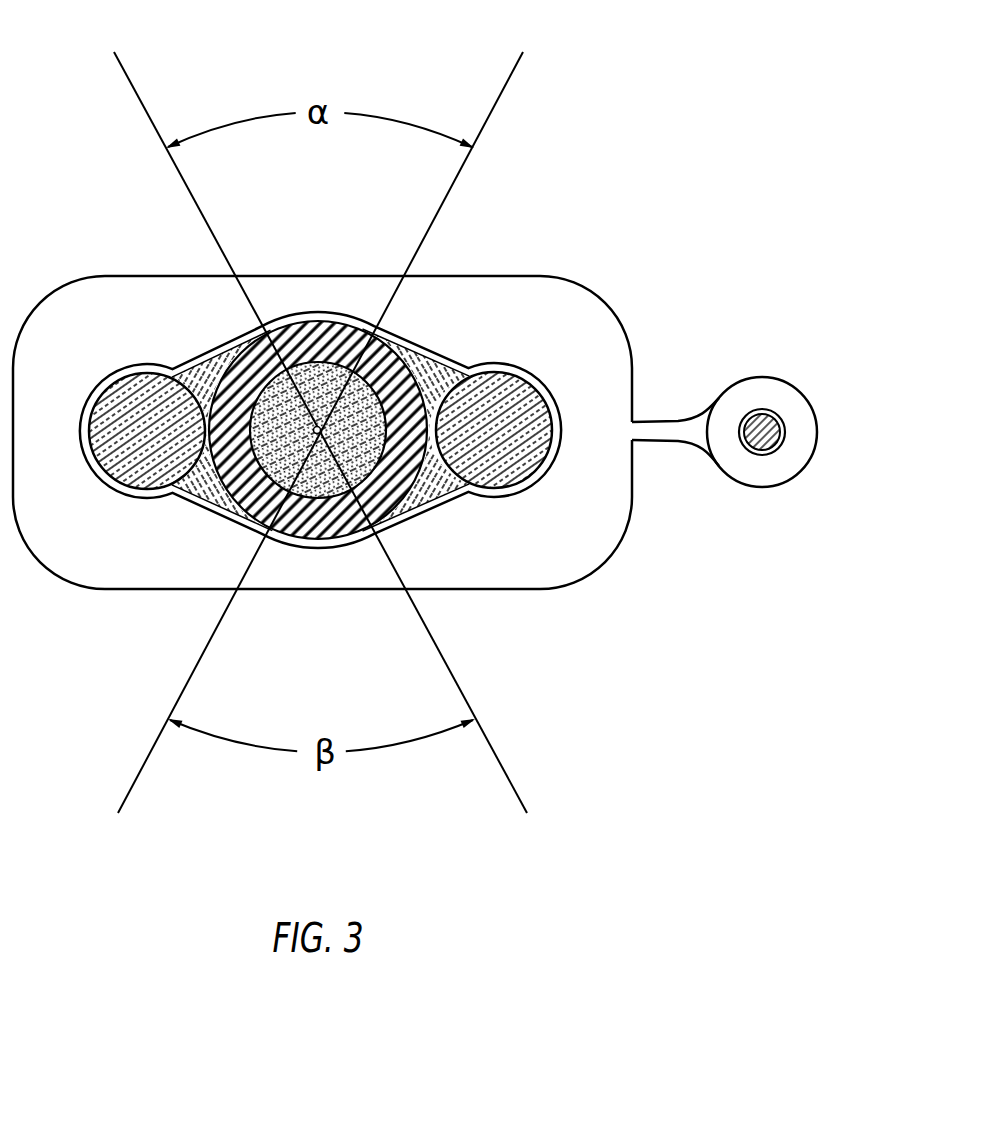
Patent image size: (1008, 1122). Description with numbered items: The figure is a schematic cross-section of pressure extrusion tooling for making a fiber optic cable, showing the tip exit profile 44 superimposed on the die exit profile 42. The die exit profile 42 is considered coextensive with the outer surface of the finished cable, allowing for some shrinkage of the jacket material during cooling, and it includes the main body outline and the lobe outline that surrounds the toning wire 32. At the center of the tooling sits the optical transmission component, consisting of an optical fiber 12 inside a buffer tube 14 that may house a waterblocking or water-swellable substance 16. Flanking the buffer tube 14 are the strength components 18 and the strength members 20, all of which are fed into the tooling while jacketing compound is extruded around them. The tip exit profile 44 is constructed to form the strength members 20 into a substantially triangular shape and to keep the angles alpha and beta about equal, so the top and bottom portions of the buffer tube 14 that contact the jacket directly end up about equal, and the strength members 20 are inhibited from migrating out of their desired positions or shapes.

The optical fiber 12 is at (316, 435).
The buffer tube 14 is at (363, 330).
The waterblocking and/or water-swellable substance 16 is at (367, 477).
The strength component 18 is at (140, 364).
The strength member 20 is at (207, 343).
The toning wire 32 is at (785, 433).
The die exit profile 42 is at (133, 275).
The tip exit profile 44 is at (347, 315).